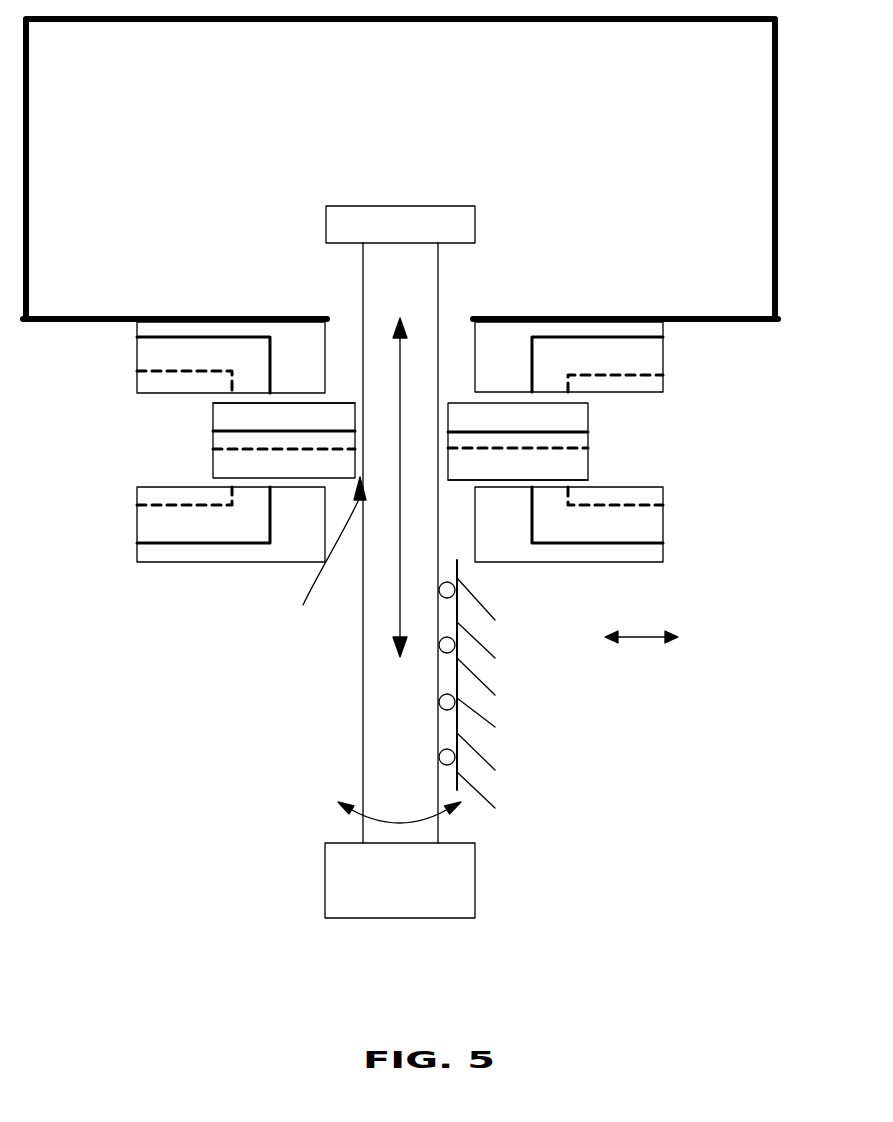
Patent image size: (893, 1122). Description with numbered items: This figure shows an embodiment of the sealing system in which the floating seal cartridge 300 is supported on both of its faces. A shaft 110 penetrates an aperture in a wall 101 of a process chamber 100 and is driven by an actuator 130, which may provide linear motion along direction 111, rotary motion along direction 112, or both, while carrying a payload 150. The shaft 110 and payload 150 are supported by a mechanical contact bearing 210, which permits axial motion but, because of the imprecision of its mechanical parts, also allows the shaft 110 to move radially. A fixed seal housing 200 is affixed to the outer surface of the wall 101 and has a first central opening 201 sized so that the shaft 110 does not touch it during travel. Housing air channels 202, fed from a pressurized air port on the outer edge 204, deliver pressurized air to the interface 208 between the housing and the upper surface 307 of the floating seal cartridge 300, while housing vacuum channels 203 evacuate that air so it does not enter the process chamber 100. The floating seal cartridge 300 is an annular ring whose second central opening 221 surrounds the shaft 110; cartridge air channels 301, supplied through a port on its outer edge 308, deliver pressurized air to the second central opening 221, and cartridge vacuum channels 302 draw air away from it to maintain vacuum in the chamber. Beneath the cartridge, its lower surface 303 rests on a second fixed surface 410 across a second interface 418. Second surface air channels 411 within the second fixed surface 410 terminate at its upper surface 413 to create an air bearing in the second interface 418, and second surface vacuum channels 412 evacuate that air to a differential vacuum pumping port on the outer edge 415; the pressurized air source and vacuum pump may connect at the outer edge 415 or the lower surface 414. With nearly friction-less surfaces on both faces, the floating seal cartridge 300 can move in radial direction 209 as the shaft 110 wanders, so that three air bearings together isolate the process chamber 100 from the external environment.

The process chamber 100 is at (101, 66).
The wall 101 is at (182, 316).
The payload 150 is at (420, 236).
The actuator 130 is at (420, 894).
The shaft 110 is at (363, 743).
The axial direction 111 is at (400, 592).
The rotational direction 112 is at (422, 820).
The first central opening 201 is at (456, 312).
The outer edge 204 is at (137, 352).
The fixed seal housing 200 is at (610, 393).
The housing vacuum channels 203 is at (663, 340).
The housing air channels 202 is at (645, 375).
The interface 208 is at (582, 405).
The floating seal cartridge 300 is at (212, 466).
The upper surface 307 is at (213, 398).
The cartridge vacuum channels 302 is at (213, 428).
The cartridge air channels 301 is at (213, 448).
The outer edge 308 is at (588, 440).
The lower surface 303 is at (488, 480).
The lower surface 414 is at (247, 563).
The second fixed surface 410 is at (137, 522).
The upper surface 413 is at (150, 484).
The second surface air channels 411 is at (177, 507).
The second surface vacuum channels 412 is at (207, 545).
The outer edge 415 is at (663, 520).
The second interface 418 is at (603, 482).
The second central opening 221 is at (314, 551).
The radial direction 209 is at (641, 654).
The mechanical contact bearing 210 is at (450, 712).